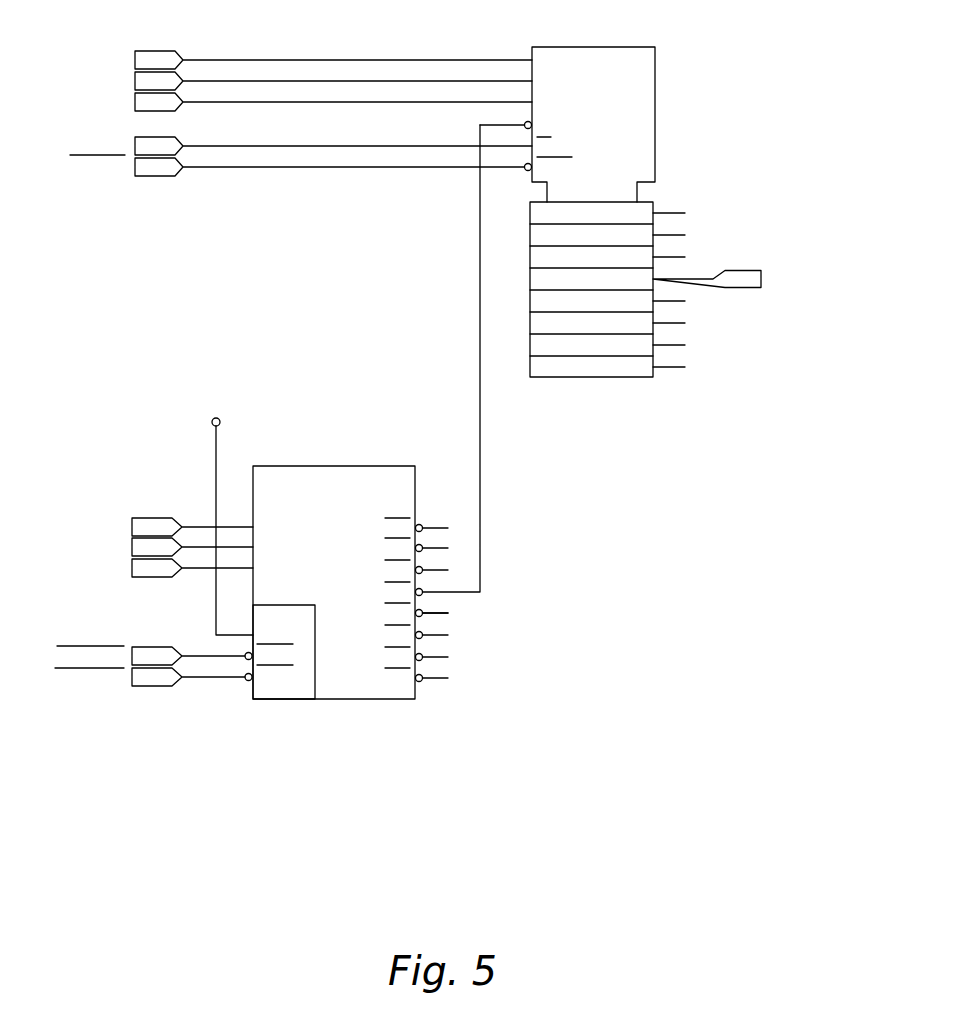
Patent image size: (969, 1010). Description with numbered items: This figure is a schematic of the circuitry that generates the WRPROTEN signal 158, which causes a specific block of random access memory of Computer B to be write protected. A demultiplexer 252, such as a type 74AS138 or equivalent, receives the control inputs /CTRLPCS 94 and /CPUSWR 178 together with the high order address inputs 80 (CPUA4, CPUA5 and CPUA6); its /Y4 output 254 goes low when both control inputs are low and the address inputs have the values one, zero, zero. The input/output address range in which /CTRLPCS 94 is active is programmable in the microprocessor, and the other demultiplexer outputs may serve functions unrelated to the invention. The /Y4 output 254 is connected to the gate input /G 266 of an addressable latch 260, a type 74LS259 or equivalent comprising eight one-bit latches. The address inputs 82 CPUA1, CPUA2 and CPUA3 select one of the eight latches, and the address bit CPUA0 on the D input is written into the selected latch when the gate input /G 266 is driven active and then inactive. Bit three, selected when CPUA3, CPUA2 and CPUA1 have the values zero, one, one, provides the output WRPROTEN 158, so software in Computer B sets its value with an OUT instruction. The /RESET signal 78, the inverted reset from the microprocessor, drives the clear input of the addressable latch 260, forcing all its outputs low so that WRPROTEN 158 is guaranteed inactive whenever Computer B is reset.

The address inputs 82 is at (70, 81).
The /RESET signal 78 is at (70, 165).
The addressable latch 260 is at (628, 93).
The gate input /G 266 is at (552, 127).
The WRPROTEN signal 158 is at (865, 272).
The CPU address lines 80 is at (63, 547).
The demultiplexer 252 is at (348, 542).
The /Y4 output 254 is at (381, 612).
The /CTRLPCS control input 94 is at (42, 652).
The /CPUSWR control input 178 is at (57, 680).